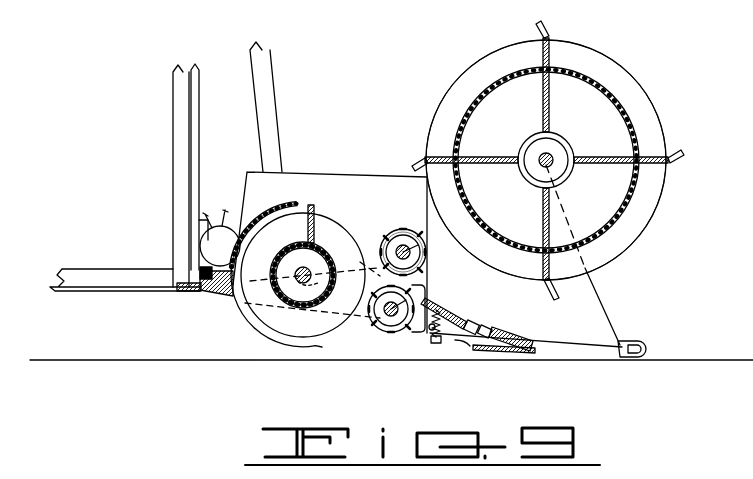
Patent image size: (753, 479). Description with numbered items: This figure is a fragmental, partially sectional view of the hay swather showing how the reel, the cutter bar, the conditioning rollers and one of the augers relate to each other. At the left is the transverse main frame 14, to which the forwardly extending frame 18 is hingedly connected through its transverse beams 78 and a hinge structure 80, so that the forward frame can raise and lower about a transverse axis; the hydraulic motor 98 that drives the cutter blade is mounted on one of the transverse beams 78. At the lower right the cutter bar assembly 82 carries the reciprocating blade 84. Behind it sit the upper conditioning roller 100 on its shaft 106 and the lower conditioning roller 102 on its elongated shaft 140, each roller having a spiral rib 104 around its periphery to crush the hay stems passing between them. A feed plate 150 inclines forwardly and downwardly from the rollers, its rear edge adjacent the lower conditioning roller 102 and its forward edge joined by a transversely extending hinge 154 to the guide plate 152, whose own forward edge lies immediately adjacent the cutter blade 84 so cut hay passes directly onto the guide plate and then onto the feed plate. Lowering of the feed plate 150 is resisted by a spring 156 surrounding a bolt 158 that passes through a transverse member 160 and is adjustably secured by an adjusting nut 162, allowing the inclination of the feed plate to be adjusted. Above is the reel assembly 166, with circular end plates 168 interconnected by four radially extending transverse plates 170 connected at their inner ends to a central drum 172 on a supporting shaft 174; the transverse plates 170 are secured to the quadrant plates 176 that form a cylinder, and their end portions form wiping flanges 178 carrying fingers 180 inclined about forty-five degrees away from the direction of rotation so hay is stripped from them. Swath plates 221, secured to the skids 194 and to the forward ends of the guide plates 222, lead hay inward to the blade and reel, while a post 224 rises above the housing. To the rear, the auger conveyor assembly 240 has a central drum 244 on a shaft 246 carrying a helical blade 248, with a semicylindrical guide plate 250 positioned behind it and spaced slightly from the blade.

The transverse main frame 14 is at (78, 268).
The forwardly extending frame 18 is at (350, 328).
The transverse beams 78 is at (222, 298).
The hinge structure 80 is at (197, 291).
The cutter bar assembly 82 is at (548, 352).
The reciprocating blade 84 is at (510, 352).
The hydraulic motor 98 is at (210, 242).
The upper conditioning roller 100 is at (384, 228).
The lower conditioning roller 102 is at (392, 335).
The spiral rib 104 is at (430, 245).
The shaft 106 is at (432, 232).
The elongated shaft 140 is at (430, 300).
The feed plate 150 is at (452, 322).
The guide plate 152 is at (490, 330).
The hinge 154 is at (456, 342).
The spring 156 is at (445, 332).
The bolt 158 is at (434, 344).
The transverse member 160 is at (412, 330).
The adjusting nut 162 is at (428, 340).
The reel assembly 166 is at (618, 50).
The circular end plates 168 is at (462, 80).
The transverse plates 170 is at (550, 105).
The central drum 172 is at (572, 140).
The supporting shaft 174 is at (540, 168).
The quadrant plates 176 is at (608, 92).
The wiping flanges 178 is at (540, 45).
The fingers 180 is at (546, 26).
The skids 194 is at (624, 357).
The swath plates 221 is at (600, 290).
The guide plates 222 is at (311, 177).
The post 224 is at (270, 100).
The auger conveyor assembly 240 is at (322, 214).
The central drum 244 is at (322, 247).
The shaft 246 is at (300, 264).
The helical blade 248 is at (306, 215).
The semicylindrical guide plate 250 is at (262, 212).